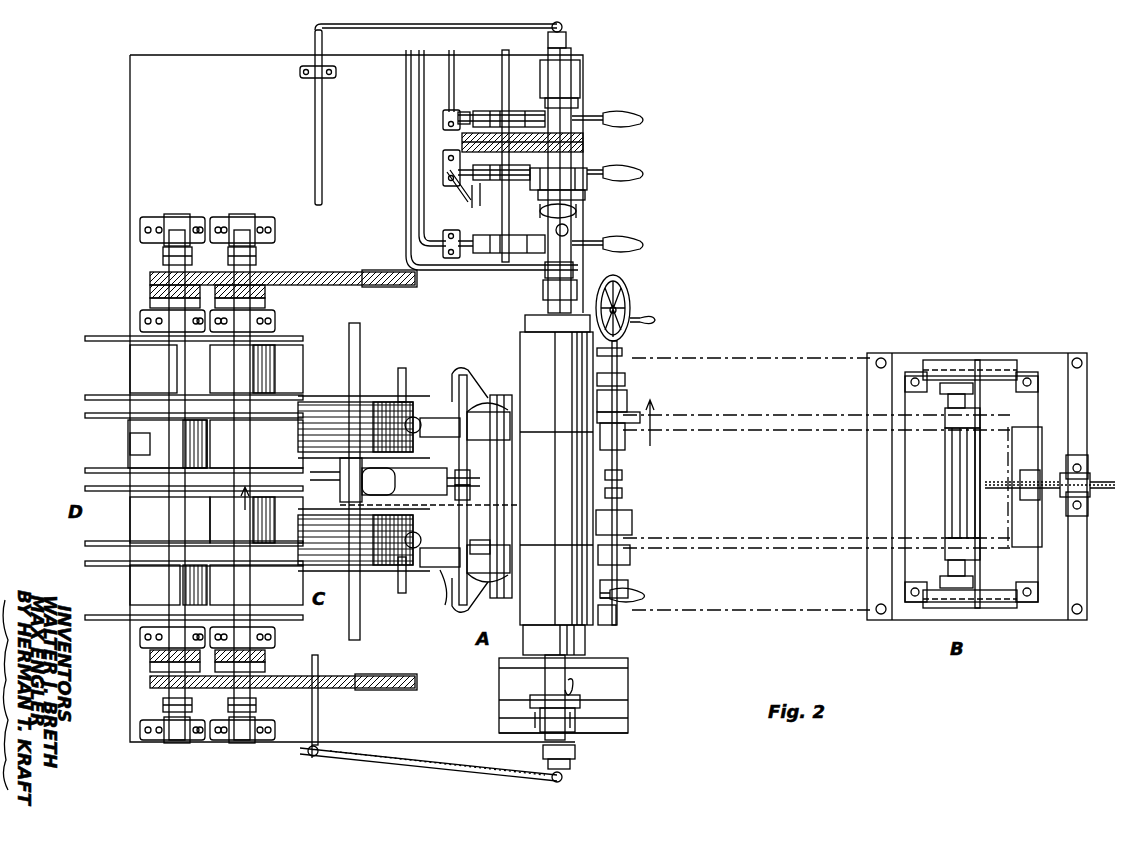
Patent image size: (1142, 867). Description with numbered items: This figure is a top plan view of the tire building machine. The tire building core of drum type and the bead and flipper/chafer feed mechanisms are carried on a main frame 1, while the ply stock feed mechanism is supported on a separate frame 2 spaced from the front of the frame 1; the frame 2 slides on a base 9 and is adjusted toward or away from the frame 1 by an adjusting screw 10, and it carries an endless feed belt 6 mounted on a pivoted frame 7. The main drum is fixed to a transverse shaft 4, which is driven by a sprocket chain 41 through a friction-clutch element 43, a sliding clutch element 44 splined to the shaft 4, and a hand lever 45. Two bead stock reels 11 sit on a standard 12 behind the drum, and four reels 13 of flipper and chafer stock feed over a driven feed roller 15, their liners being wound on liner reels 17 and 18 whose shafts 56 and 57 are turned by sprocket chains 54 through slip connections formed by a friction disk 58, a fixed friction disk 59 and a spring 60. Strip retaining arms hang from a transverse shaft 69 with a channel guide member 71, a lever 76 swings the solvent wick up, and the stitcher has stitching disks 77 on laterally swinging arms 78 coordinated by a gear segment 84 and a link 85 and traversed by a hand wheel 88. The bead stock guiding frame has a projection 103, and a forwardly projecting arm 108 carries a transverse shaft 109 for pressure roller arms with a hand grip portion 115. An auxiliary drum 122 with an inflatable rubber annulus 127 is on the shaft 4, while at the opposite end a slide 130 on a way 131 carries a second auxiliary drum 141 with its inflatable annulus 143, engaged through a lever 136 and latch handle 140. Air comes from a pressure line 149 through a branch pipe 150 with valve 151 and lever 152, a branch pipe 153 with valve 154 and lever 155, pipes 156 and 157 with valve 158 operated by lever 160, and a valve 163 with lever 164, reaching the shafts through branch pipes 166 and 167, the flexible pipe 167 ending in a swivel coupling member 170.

The frame 1 is at (130, 182).
The frame 2 is at (983, 362).
The transverse shaft 4 is at (578, 268).
The endless feed belt 6 is at (945, 490).
The frame 7 is at (974, 396).
The base 9 is at (1052, 616).
The adjusting screw 10 is at (1050, 496).
The bead stock reels 11 is at (316, 402).
The standard 12 is at (340, 494).
The reels 13 is at (104, 342).
The feed roller 15 is at (612, 484).
The liner reels 17 is at (200, 438).
The liner reels 18 is at (270, 366).
The sprocket chain 41 is at (470, 153).
The friction-clutch element 43 is at (589, 184).
The sliding clutch element 44 is at (585, 200).
The hand lever 45 is at (570, 224).
The sprocket chains 54 is at (326, 272).
The shaft 56 is at (155, 475).
The shaft 57 is at (240, 410).
The friction disk 58 is at (150, 290).
The friction disk 59 is at (150, 304).
The spring 60 is at (164, 252).
The transverse shaft 69 is at (622, 500).
The channel guide member 71 is at (628, 562).
The lever 76 is at (648, 597).
The stitching disks 77 is at (500, 408).
The laterally swinging arms 78 is at (482, 388).
The gear segment 84 is at (472, 472).
The link 85 is at (472, 490).
The hand wheel 88 is at (632, 310).
The projection 103 is at (420, 361).
The forwardly projecting arm 108 is at (470, 504).
The transverse shaft 109 is at (450, 590).
The hand grip portion 115 is at (490, 548).
The auxiliary drum 122 is at (525, 316).
The inflatable rubber annulus 127 is at (522, 348).
The slide 130 is at (612, 722).
The way 131 is at (616, 733).
The lever 136 is at (606, 690).
The handle 140 is at (546, 700).
The auxiliary drum 141 is at (592, 646).
The inflatable annulus 143 is at (612, 622).
The pressure line 149 is at (500, 62).
The branch pipe 150 is at (448, 66).
The valve 151 is at (500, 110).
The lever 152 is at (630, 114).
The branch pipe 153 is at (468, 203).
The valve 154 is at (478, 207).
The lever 155 is at (648, 176).
The pipe 156 is at (406, 208).
The pipe 157 is at (419, 232).
The valve 158 is at (518, 268).
The lever 160 is at (648, 246).
The valve 163 is at (380, 410).
The lever 164 is at (398, 482).
The branch pipe 166 is at (397, 28).
The branch pipe 167 is at (422, 768).
The swivel coupling member 170 is at (568, 775).